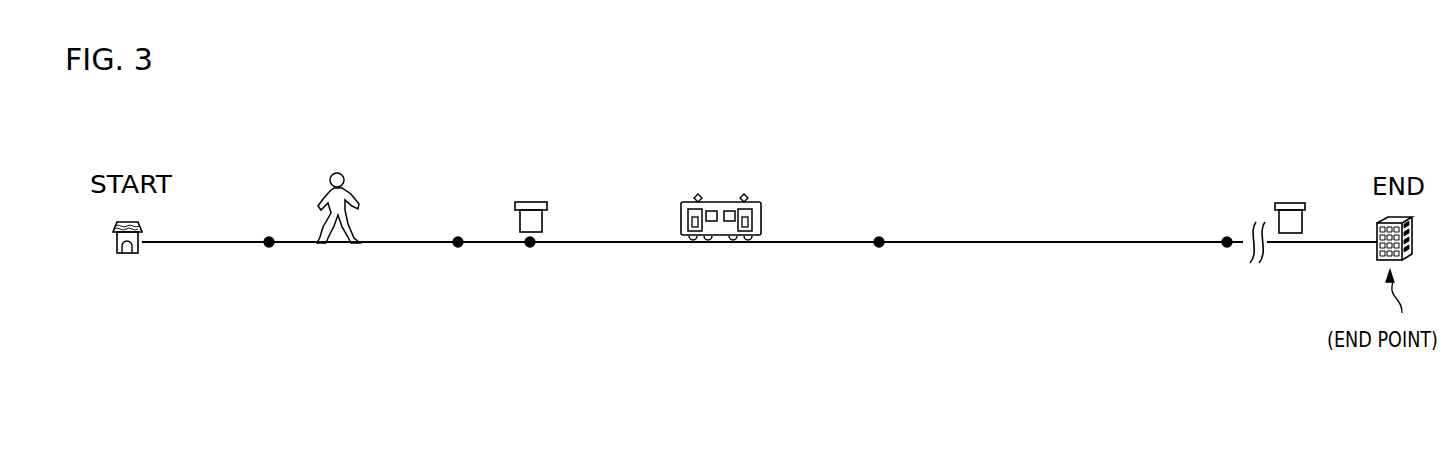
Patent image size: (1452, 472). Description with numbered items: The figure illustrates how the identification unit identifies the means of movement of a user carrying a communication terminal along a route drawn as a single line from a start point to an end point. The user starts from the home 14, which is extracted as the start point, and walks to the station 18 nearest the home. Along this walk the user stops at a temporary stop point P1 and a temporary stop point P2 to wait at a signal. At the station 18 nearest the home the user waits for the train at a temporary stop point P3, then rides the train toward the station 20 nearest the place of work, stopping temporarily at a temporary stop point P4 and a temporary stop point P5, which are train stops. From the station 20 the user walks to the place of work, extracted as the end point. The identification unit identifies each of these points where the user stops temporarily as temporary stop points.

The home 14 is at (132, 259).
The station nearest the home 18 is at (532, 199).
The station nearest the place of work 20 is at (1292, 197).
The temporary stop point P1 is at (269, 247).
The temporary stop point P2 is at (458, 247).
The temporary stop point P3 is at (530, 247).
The temporary stop point P4 is at (879, 247).
The temporary stop point P5 is at (1227, 247).